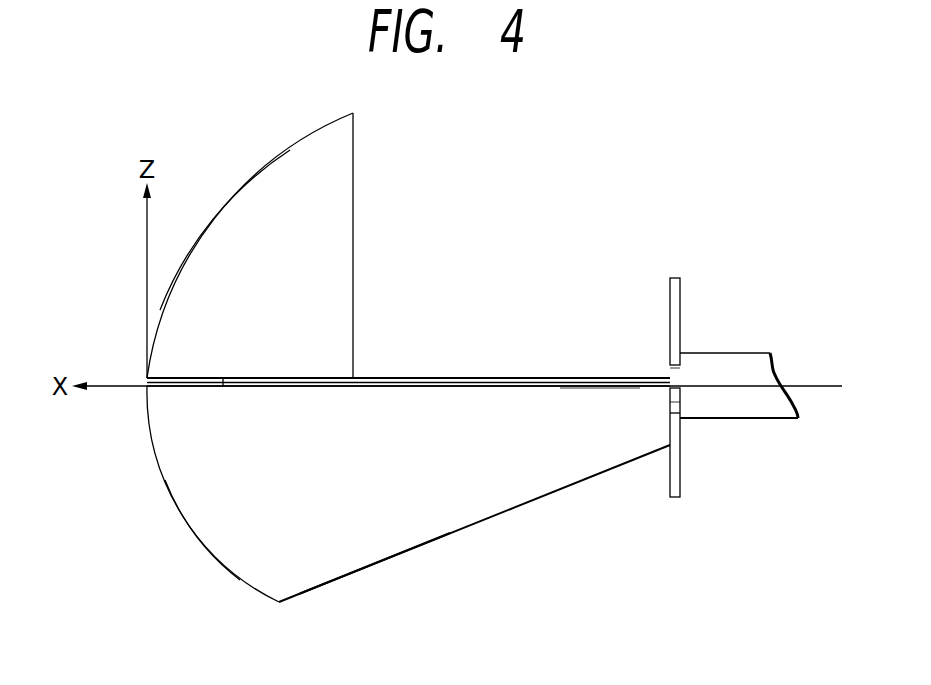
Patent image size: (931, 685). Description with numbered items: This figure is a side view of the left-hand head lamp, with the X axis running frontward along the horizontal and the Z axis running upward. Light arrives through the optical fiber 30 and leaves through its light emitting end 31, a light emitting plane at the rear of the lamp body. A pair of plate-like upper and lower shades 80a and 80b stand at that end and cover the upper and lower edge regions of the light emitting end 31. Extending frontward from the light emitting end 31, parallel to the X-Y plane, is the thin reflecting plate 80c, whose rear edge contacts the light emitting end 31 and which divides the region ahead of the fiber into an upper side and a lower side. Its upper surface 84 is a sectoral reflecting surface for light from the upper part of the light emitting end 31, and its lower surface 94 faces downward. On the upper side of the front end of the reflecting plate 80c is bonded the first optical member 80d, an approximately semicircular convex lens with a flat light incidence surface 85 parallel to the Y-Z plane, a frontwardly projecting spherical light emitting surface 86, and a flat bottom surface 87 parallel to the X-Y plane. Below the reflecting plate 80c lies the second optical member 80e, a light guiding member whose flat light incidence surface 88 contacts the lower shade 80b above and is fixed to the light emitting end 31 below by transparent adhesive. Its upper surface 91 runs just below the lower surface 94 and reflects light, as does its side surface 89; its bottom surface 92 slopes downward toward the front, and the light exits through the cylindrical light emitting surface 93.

The optical fiber 30 is at (738, 408).
The light emitting end 31 is at (670, 372).
The upper shade 80a is at (680, 289).
The lower shade 80b is at (675, 497).
The reflecting plate 80c is at (485, 383).
The first optical member 80d is at (243, 215).
The second optical member 80e is at (213, 533).
The upper surface 84 is at (410, 378).
The light incidence surface 85 is at (353, 173).
The light emitting surface 86 is at (282, 158).
The bottom surface 87 is at (223, 387).
The light incidence surface 88 is at (672, 402).
The side surface 89 is at (438, 512).
The upper surface 91 is at (558, 383).
The bottom surface 92 is at (352, 577).
The light emitting surface 93 is at (168, 493).
The lower surface 94 is at (583, 388).